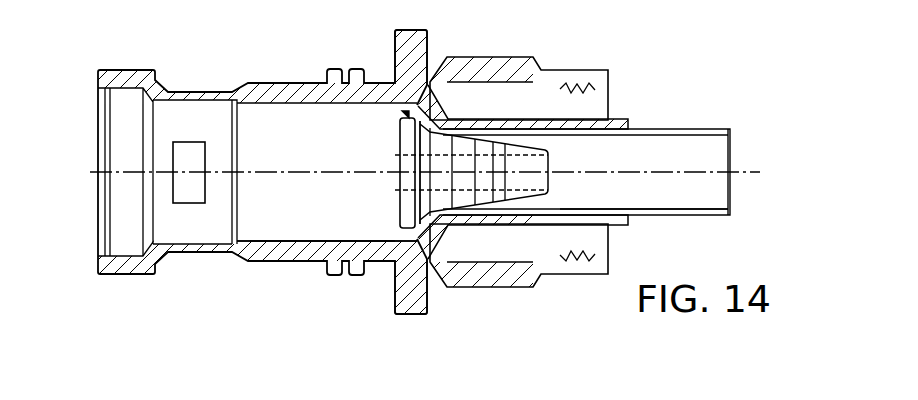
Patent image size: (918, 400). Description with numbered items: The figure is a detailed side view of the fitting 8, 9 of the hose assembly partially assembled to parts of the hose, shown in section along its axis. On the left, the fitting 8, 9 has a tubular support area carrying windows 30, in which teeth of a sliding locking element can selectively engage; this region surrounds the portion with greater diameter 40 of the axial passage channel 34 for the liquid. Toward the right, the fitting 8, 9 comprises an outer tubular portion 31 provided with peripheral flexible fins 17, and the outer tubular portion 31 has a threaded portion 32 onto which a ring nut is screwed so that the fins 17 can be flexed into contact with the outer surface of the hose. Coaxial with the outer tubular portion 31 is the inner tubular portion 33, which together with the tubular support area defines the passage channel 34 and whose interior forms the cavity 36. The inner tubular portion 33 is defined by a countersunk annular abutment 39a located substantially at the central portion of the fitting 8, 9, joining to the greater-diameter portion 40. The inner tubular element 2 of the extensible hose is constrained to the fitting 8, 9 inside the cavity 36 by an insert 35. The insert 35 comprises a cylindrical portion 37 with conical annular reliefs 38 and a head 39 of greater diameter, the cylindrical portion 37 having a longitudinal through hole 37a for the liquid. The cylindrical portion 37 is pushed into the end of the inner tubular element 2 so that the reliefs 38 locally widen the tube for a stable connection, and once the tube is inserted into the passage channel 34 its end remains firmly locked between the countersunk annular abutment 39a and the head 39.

The inner tubular element 2 is at (700, 160).
The fitting 8 is at (160, 291).
The fitting 9 is at (262, 201).
The peripheral flexible fins 17 is at (590, 73).
The windows 30 is at (190, 196).
The outer tubular portion 31 is at (436, 70).
The threaded portion 32 is at (493, 67).
The inner tubular portion 33 is at (622, 124).
The axial passage channel 34 is at (358, 231).
The insert 35 is at (438, 163).
The cavity 36 is at (606, 206).
The cylindrical portion 37 is at (487, 196).
The longitudinal through hole 37a is at (412, 182).
The conical annular reliefs 38 is at (458, 198).
The head 39 is at (407, 226).
The countersunk annular abutment 39a is at (404, 116).
The portion with greater diameter 40 is at (280, 231).